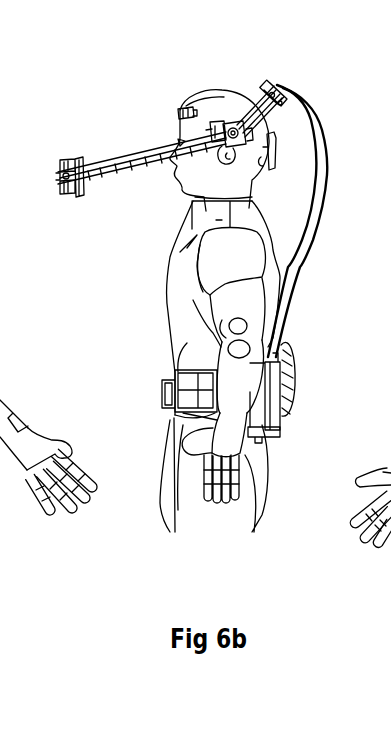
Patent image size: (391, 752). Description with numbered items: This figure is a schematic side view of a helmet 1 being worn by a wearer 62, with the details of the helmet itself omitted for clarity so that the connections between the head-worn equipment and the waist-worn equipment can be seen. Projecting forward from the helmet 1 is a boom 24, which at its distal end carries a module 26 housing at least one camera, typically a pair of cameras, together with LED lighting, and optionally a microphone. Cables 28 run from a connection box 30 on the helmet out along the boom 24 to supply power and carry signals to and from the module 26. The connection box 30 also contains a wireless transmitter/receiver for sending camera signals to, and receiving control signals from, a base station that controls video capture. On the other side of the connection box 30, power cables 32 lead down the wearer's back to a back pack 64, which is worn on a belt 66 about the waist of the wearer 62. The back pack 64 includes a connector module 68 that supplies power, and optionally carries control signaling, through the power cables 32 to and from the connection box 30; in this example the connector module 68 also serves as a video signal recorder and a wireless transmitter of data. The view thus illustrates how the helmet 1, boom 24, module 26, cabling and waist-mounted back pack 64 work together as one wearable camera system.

The helmet 1 is at (172, 92).
The boom 24 is at (127, 158).
The module 26 is at (67, 163).
The cables 28 is at (243, 118).
The connection box 30 is at (266, 83).
The power cables 32 is at (327, 163).
The wearer 62 is at (186, 246).
The back pack 64 is at (283, 436).
The belt 66 is at (185, 388).
The connector module 68 is at (290, 400).